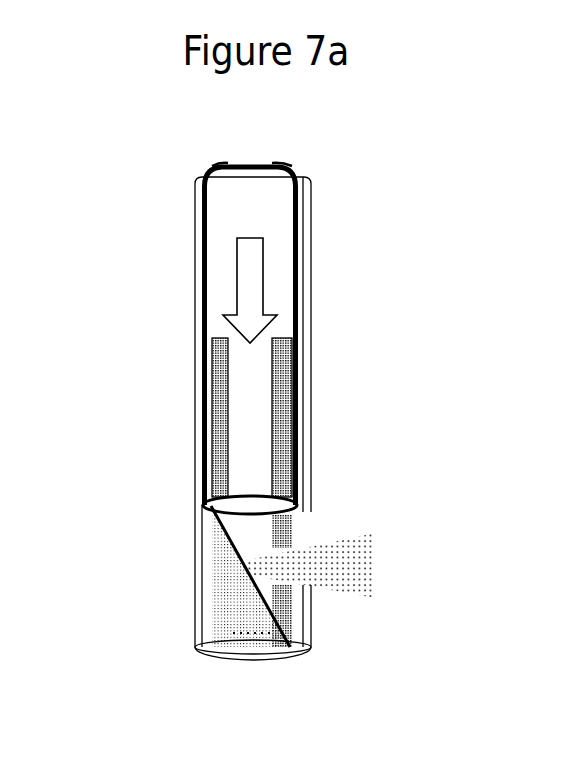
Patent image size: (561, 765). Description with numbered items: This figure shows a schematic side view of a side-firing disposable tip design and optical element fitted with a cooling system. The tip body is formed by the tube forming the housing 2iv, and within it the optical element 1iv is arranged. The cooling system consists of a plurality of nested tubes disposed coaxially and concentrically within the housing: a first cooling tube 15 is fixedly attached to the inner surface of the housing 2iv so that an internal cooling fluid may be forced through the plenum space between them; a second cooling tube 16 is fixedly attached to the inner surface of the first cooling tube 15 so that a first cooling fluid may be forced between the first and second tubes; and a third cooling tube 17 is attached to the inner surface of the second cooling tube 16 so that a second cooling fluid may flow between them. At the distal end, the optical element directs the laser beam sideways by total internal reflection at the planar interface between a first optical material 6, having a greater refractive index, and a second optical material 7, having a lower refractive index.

The first cooling tube 15 is at (307, 205).
The housing 2iv is at (308, 287).
The absorbent material 1iv is at (283, 397).
The second cooling tube 16 is at (311, 512).
The third cooling tube 17 is at (203, 514).
The second optical material 7 is at (224, 608).
The first optical material 6 is at (278, 607).